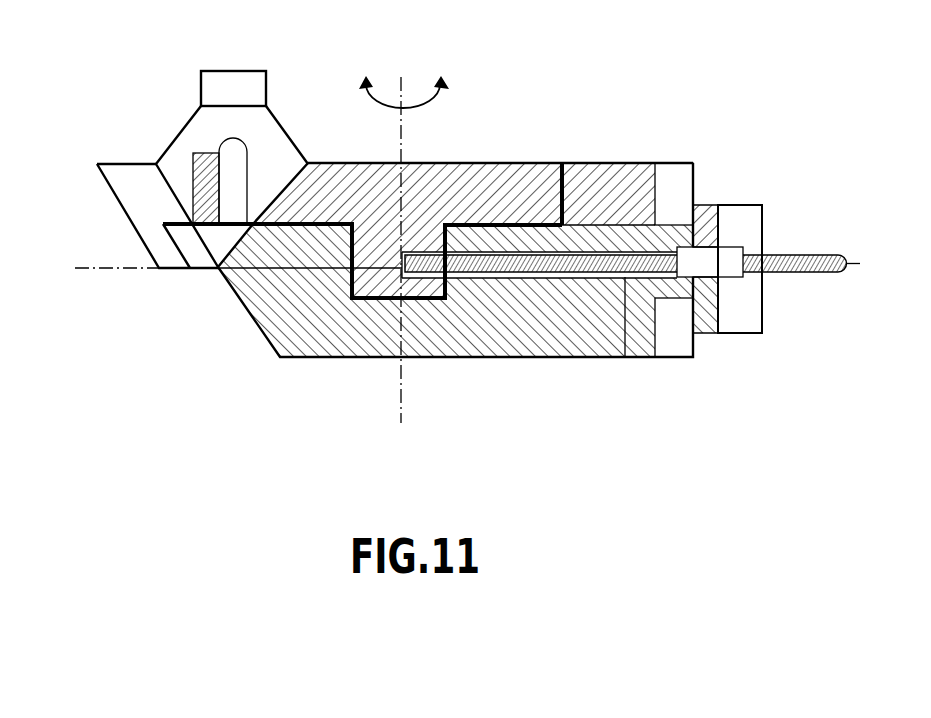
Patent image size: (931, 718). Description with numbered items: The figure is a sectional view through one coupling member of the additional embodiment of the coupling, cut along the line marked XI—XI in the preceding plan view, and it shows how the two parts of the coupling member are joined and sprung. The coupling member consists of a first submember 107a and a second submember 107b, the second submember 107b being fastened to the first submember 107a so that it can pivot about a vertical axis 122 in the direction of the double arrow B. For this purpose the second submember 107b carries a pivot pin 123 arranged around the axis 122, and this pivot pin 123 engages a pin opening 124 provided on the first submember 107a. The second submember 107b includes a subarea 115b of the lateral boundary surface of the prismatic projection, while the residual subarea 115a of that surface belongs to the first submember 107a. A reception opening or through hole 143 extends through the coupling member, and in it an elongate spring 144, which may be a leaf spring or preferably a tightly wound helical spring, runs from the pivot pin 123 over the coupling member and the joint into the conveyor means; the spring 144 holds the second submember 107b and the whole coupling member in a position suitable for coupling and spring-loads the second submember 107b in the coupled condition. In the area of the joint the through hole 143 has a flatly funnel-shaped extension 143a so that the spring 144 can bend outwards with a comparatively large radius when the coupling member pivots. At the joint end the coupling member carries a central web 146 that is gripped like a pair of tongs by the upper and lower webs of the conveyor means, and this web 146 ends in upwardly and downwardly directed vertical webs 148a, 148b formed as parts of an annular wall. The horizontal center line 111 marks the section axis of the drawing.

The first submember 107a is at (260, 320).
The second submember 107b is at (505, 192).
The axis 111 is at (97, 270).
The subarea of lateral boundary surface 115a is at (220, 246).
The subarea of lateral boundary surface 115b is at (178, 160).
The vertical axis 122 is at (407, 73).
The pivot pin 123 is at (378, 300).
The pin opening 124 is at (433, 300).
The reception opening 143 is at (572, 278).
The funnel-shaped extension 143a is at (733, 280).
The elongate spring 144 is at (620, 278).
The central web 146 is at (678, 298).
The vertical web 148a is at (707, 204).
The vertical web 148b is at (708, 333).